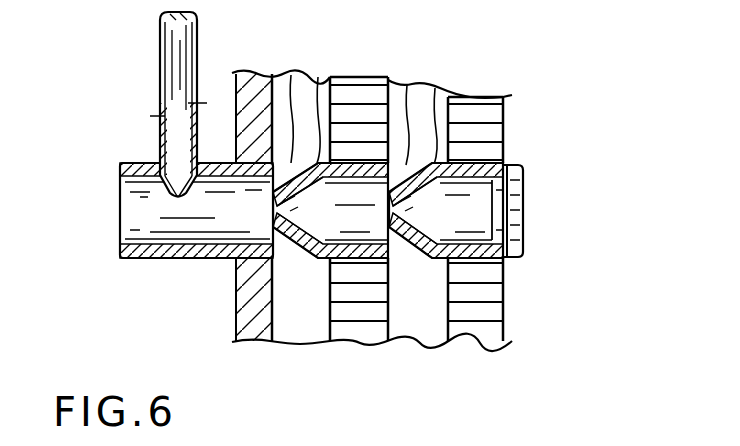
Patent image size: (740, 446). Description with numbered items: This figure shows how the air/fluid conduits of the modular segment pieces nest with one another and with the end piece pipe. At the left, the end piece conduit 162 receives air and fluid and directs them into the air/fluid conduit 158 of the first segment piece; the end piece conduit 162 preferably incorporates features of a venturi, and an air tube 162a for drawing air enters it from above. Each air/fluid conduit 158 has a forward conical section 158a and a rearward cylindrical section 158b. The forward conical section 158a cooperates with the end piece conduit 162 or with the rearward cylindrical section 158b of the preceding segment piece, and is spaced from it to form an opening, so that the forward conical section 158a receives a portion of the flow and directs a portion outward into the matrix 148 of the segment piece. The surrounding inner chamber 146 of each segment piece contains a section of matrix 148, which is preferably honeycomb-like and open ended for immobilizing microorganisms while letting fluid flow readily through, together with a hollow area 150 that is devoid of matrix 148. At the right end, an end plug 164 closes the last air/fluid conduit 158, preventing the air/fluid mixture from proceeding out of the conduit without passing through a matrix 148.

The inner chamber 146 is at (283, 328).
The matrix 148 is at (360, 325).
The hollow area 150 is at (310, 325).
The air/fluid conduit 158 is at (323, 77).
The forward conical section 158a is at (290, 75).
The rearward cylindrical section 158b is at (500, 160).
The end piece conduit 162 is at (173, 260).
The air tube 162a is at (172, 72).
The end plug 164 is at (520, 197).